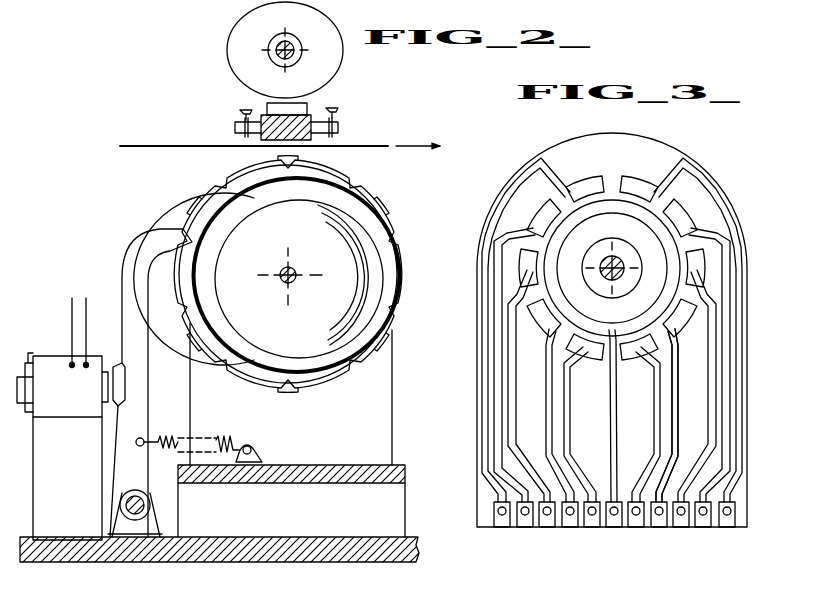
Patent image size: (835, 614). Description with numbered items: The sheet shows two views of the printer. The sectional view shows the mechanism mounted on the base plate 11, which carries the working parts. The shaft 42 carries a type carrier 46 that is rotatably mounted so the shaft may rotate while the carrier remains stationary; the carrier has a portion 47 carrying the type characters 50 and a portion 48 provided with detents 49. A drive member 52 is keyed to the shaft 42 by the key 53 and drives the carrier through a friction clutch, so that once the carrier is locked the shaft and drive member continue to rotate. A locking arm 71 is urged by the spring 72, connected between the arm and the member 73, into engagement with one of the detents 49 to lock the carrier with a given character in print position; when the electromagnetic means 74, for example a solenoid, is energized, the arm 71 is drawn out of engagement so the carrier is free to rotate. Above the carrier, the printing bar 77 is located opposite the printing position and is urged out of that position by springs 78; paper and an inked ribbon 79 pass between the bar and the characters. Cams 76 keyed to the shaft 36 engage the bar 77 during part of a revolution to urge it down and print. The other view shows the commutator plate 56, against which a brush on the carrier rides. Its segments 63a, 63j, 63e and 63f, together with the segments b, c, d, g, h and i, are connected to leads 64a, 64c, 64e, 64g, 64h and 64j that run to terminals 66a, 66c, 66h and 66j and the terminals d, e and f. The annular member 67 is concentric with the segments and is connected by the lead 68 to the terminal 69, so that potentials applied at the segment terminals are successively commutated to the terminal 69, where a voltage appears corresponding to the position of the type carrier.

In FIG. 2, the base plate 11 is at (243, 556).
In FIG. 2, the shaft 36 is at (281, 42).
In FIG. 2, the shaft 42 is at (294, 270).
In FIG. 3, the shaft 42 is at (616, 262).
In FIG. 2, the type carrier 46 is at (203, 193).
In FIG. 2, the portion 47 is at (391, 272).
In FIG. 2, the portion 48 is at (386, 258).
In FIG. 2, the detents 49 is at (282, 178).
In FIG. 2, the type characters 50 is at (365, 180).
In FIG. 2, the drive member 52 is at (342, 316).
In FIG. 2, the key 53 is at (285, 267).
In FIG. 2, the commutator plate 56 is at (388, 357).
In FIG. 3, the commutator plate 56 is at (683, 160).
In FIG. 2, the locking arm 71 is at (126, 270).
In FIG. 2, the spring 72 is at (233, 440).
In FIG. 2, the member 73 is at (252, 455).
In FIG. 2, the electromagnetic means 74 is at (47, 357).
In FIG. 2, the cams 76 is at (228, 50).
In FIG. 2, the printing bar 77 is at (312, 118).
In FIG. 2, the springs 78 is at (240, 111).
In FIG. 2, the inked ribbon 79 is at (160, 146).
In FIG. 3, the segment 63a is at (588, 180).
In FIG. 3, the segment 63j is at (634, 180).
In FIG. 3, the segment 63e is at (588, 360).
In FIG. 3, the segment 63f is at (640, 360).
In FIG. 3, the contact segment b is at (531, 213).
In FIG. 3, the contact segment c is at (526, 270).
In FIG. 3, the contact segment d is at (540, 324).
In FIG. 3, the terminal e is at (592, 528).
In FIG. 3, the terminal f is at (636, 528).
In FIG. 3, the contact segment g is at (684, 322).
In FIG. 3, the contact segment h is at (699, 270).
In FIG. 3, the contact segment i is at (685, 215).
In FIG. 3, the lead 64a is at (486, 306).
In FIG. 3, the lead 64c is at (510, 376).
In FIG. 3, the lead 64e is at (569, 438).
In FIG. 3, the lead 64g is at (677, 400).
In FIG. 3, the lead 64h is at (715, 355).
In FIG. 3, the lead 64j is at (743, 248).
In FIG. 3, the terminal 66a is at (502, 528).
In FIG. 3, the terminal 66c is at (547, 528).
In FIG. 3, the terminal 66h is at (681, 528).
In FIG. 3, the terminal 66j is at (727, 528).
In FIG. 3, the annular member 67 is at (660, 228).
In FIG. 3, the lead 68 is at (617, 432).
In FIG. 3, the terminal 69 is at (614, 528).